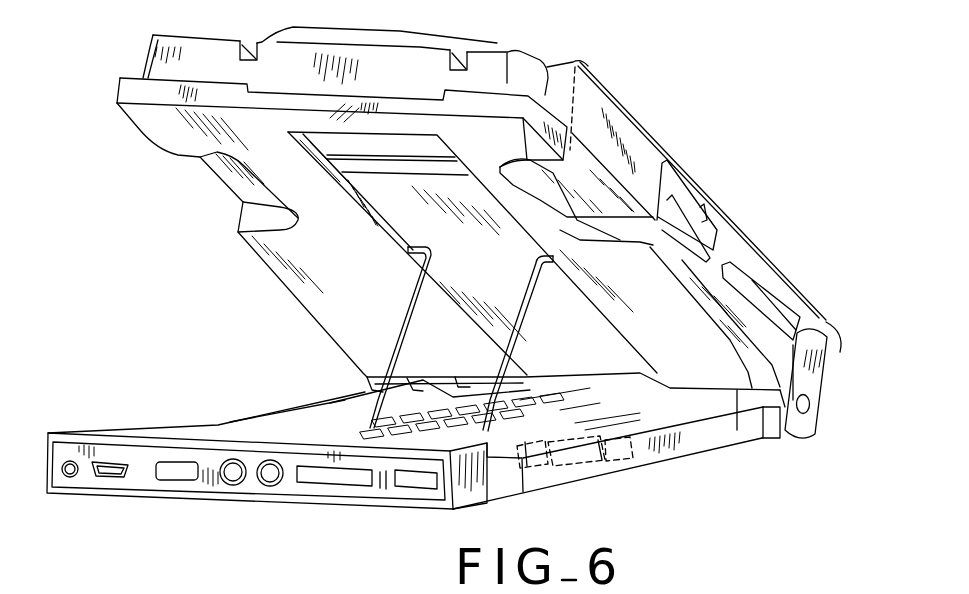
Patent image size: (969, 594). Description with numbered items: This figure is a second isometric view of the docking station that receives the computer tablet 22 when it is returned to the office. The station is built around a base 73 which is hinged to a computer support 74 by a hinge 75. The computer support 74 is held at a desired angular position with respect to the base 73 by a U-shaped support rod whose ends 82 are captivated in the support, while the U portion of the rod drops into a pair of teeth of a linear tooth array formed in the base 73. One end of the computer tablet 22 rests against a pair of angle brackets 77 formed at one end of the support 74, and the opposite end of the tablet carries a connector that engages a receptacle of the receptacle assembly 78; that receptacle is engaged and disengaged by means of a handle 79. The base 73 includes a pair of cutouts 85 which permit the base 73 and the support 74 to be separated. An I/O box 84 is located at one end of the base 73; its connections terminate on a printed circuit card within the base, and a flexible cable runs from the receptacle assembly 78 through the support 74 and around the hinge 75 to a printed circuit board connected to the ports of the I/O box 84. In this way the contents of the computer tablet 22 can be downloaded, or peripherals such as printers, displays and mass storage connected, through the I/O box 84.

The computer tablet 22 is at (690, 165).
The base 73 is at (678, 451).
The computer support 74 is at (758, 353).
The hinge 75 is at (808, 408).
The angle brackets 77 is at (836, 335).
The receptacle assembly 78 is at (238, 37).
The handle 79 is at (497, 45).
The ends of support rod 82 is at (390, 247).
The I/O box 84 is at (290, 487).
The cutouts 85 is at (560, 470).